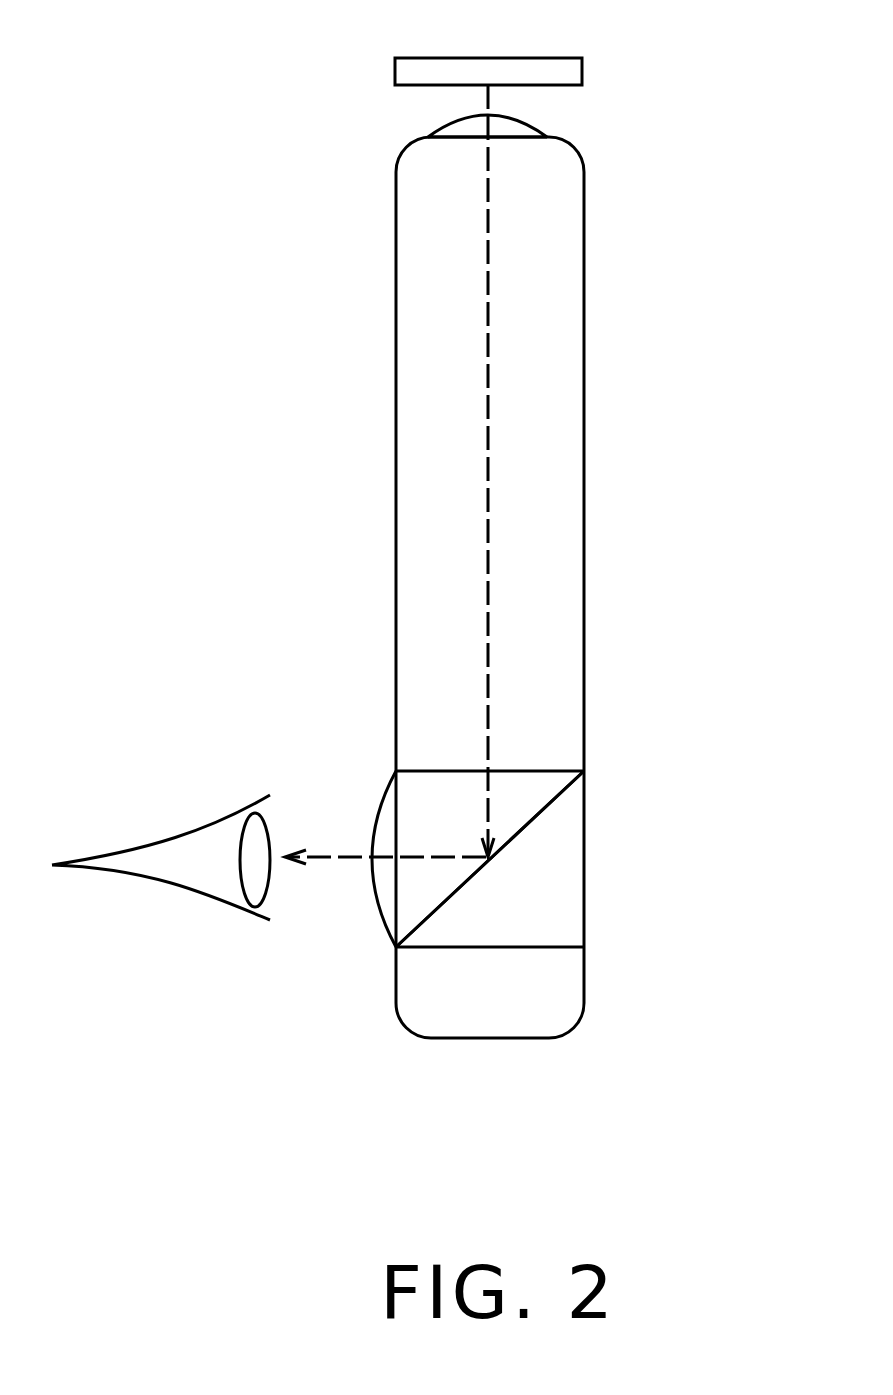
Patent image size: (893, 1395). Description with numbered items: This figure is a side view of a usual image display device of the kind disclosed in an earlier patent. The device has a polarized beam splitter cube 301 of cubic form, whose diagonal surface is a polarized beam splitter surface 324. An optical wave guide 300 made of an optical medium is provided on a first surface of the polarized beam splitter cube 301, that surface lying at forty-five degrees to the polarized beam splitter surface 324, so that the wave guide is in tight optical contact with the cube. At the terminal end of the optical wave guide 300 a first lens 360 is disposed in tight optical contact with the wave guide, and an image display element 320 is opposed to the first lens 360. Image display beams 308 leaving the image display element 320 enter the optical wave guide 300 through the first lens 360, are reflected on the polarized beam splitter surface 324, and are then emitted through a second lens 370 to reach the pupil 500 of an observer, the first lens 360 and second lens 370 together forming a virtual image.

The optical wave guide 300 is at (523, 483).
The polarized beam splitter cube 301 is at (552, 922).
The image display beams 308 is at (488, 575).
The image display element 320 is at (583, 70).
The polarized beam splitter surface 324 is at (547, 800).
The first lens 360 is at (525, 118).
The second lens 370 is at (373, 902).
The pupil 500 is at (253, 902).